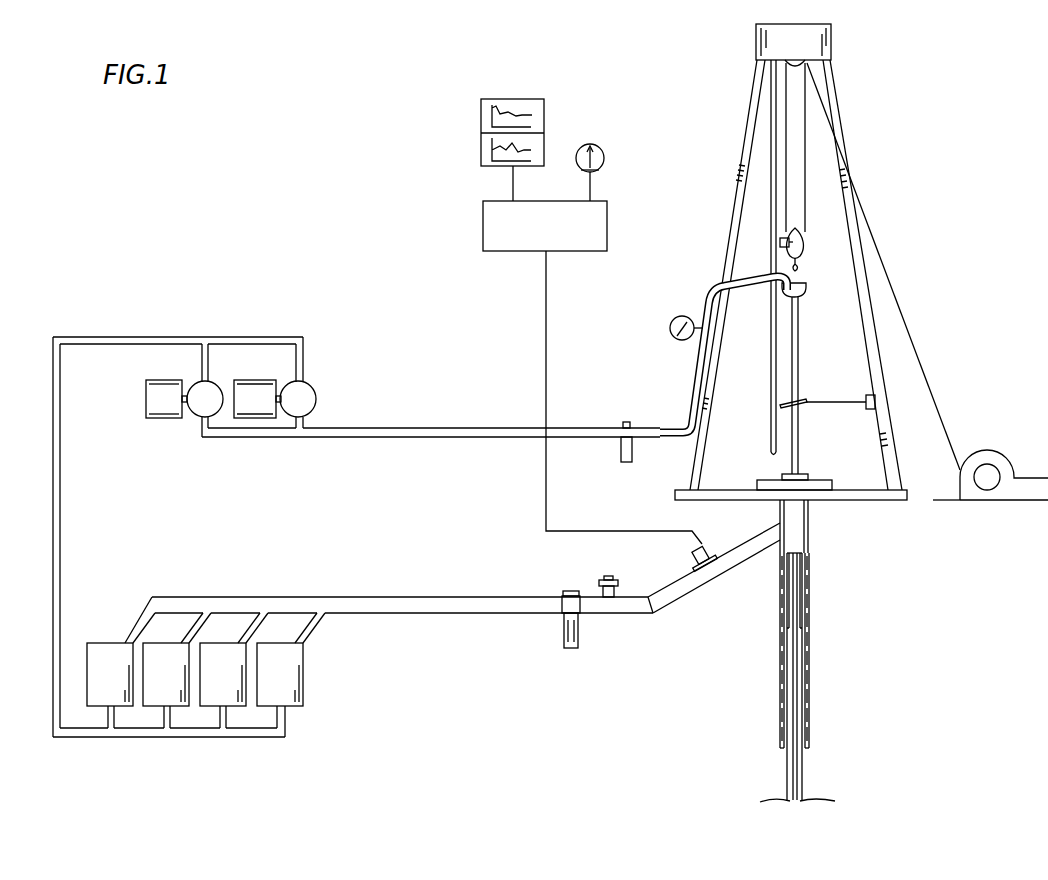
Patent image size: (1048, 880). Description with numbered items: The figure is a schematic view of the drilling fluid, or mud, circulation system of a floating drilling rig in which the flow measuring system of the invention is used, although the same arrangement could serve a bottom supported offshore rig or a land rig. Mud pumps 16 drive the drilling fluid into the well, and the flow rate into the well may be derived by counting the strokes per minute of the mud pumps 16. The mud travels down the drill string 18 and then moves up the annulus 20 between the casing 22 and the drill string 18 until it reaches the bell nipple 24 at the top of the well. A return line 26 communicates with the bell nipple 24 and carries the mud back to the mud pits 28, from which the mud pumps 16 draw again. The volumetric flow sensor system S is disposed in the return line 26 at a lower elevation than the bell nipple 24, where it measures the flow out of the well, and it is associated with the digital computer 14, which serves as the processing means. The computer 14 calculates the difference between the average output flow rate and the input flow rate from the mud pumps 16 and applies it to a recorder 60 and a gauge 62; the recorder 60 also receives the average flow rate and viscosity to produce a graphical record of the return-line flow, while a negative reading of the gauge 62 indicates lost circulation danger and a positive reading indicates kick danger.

The computer 14 is at (483, 222).
The mud pumps 16 is at (317, 398).
The drill string 18 is at (799, 344).
The annulus 20 is at (805, 636).
The casing 22 is at (778, 699).
The bell nipple 24 is at (810, 522).
The return line 26 is at (745, 567).
The mud pits 28 is at (308, 696).
The recorder 60 is at (481, 143).
The gauge 62 is at (605, 154).
The volumetric flow sensor system S is at (686, 563).